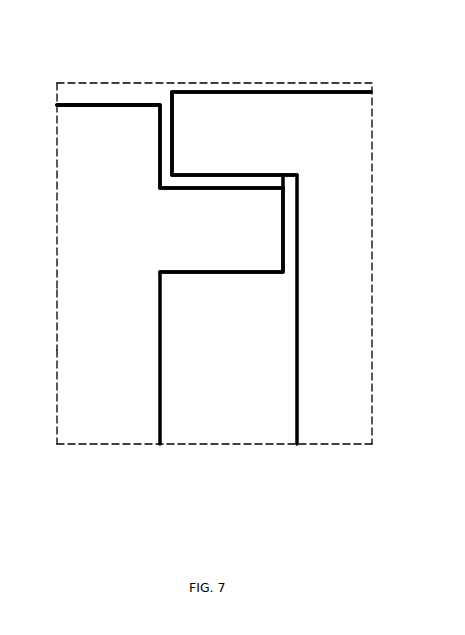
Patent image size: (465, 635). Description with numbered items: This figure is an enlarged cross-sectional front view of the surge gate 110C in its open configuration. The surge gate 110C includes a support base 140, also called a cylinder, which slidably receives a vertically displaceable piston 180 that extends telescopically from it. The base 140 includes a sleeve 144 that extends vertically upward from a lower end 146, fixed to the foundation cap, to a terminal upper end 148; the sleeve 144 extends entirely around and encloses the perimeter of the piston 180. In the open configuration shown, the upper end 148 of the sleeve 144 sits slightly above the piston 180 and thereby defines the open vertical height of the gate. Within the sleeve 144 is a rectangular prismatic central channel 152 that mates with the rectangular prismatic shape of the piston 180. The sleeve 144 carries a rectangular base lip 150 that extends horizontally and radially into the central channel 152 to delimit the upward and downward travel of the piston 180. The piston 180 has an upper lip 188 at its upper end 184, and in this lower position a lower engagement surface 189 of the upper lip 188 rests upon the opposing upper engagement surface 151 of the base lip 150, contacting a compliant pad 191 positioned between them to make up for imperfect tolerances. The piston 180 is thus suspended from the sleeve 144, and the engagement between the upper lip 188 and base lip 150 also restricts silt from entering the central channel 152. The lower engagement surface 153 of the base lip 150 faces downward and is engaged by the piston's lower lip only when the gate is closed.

The surge gate 110C is at (73, 103).
The upper end 148 is at (107, 105).
The upper lip 188 is at (197, 110).
The upper end 184 is at (320, 92).
The lower engagement surface 189 is at (222, 174).
The compliant pad 191 is at (184, 183).
The upper engagement surface 151 is at (199, 188).
The lower engagement surface 153 is at (226, 271).
The base lip 150 is at (268, 233).
The piston 180 is at (335, 166).
The lower end 146 is at (97, 266).
The sleeve 144 is at (83, 315).
The support base 140 is at (97, 375).
The central channel 152 is at (203, 405).